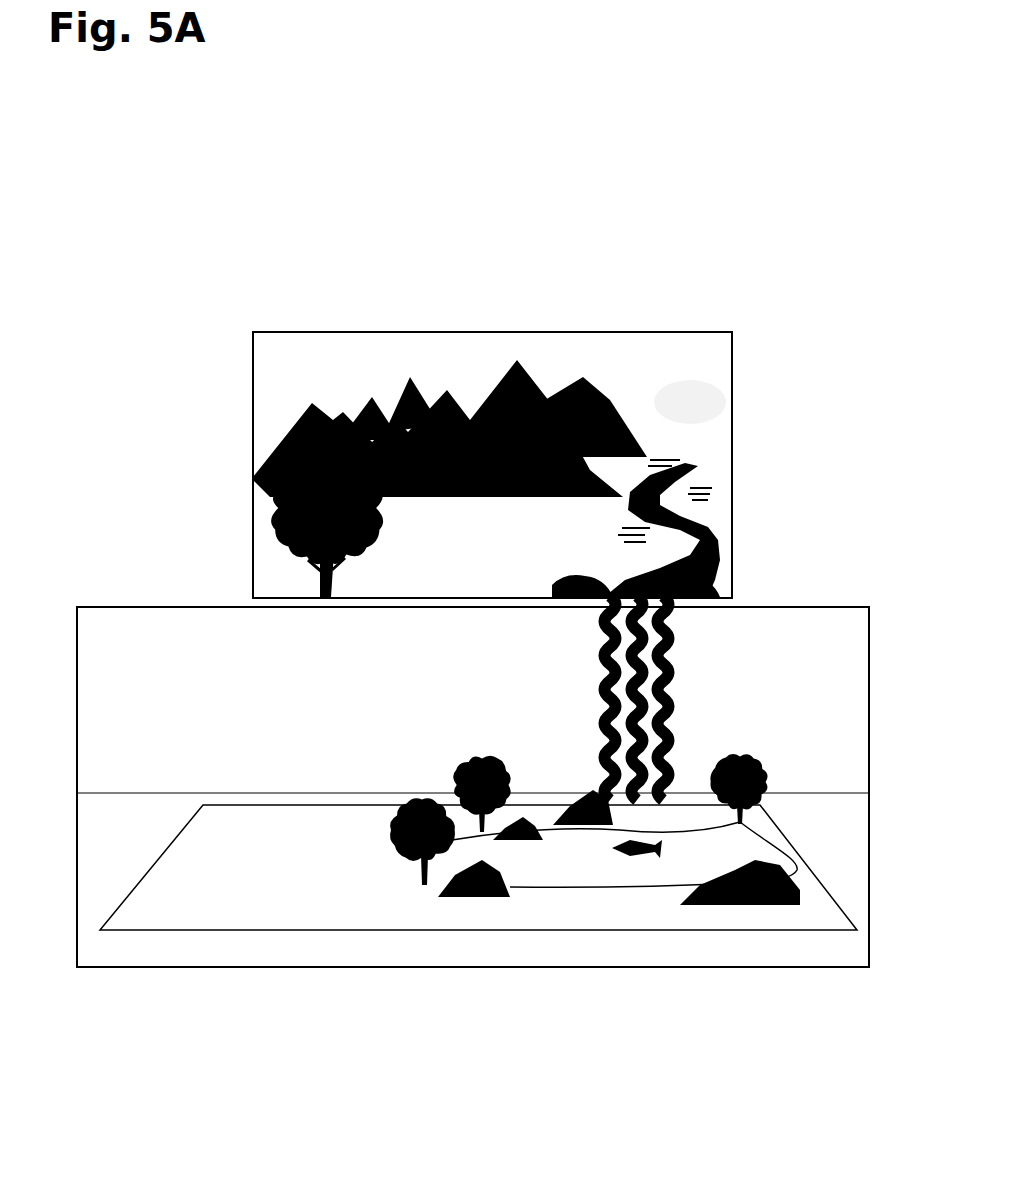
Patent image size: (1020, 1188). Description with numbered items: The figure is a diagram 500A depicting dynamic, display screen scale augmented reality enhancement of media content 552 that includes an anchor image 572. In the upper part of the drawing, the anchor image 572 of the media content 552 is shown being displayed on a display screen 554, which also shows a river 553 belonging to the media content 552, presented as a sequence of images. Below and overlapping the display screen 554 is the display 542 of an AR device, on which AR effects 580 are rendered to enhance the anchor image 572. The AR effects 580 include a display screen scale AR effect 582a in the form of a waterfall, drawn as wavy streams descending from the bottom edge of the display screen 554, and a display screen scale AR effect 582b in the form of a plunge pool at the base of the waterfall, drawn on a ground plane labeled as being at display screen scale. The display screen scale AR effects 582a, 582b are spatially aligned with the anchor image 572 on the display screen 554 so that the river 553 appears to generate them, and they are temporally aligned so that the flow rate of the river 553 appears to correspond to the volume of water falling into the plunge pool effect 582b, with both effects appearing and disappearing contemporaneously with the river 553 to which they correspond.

The diagram 500A is at (806, 205).
The display screen 554 is at (481, 333).
The media content 552 is at (652, 412).
The river 553 is at (620, 557).
The anchor image 572 is at (471, 560).
The display 542 is at (446, 968).
The AR effects 580 is at (314, 724).
The display screen scale AR effect 582a is at (605, 687).
The display screen scale AR effect 582b is at (592, 872).